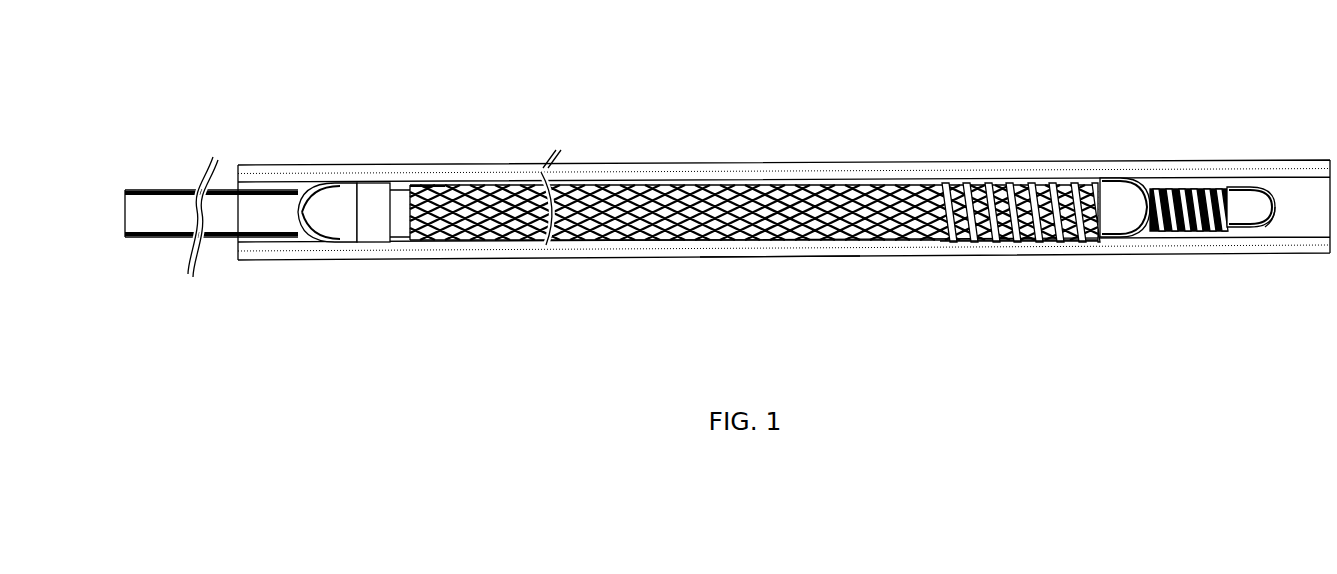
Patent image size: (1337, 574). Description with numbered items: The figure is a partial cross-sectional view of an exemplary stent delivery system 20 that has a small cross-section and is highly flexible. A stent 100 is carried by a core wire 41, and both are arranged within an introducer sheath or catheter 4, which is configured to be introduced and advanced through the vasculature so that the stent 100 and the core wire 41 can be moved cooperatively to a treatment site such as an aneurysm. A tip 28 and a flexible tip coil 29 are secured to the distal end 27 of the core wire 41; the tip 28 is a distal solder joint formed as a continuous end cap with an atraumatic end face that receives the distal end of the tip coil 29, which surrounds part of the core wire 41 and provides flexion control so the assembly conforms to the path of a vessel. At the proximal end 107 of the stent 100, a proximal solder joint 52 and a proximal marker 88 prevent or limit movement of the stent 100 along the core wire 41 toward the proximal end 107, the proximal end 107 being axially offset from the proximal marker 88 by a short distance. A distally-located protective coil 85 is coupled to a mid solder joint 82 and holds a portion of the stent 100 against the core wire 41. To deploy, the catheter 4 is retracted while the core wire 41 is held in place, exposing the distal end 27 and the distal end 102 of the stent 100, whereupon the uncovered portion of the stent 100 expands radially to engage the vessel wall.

The catheter 4 is at (681, 170).
The stent delivery system 20 is at (780, 266).
The distal end 27 is at (1274, 232).
The tip 28 is at (1245, 181).
The tip coil 29 is at (1195, 232).
The core wire 41 is at (162, 230).
The proximal solder joint 52 is at (343, 178).
The mid solder joint 82 is at (1122, 174).
The protective coil 85 is at (1032, 241).
The proximal marker 88 is at (375, 238).
The stent 100 is at (612, 240).
The distal end 102 is at (1020, 172).
The proximal end 107 is at (446, 178).